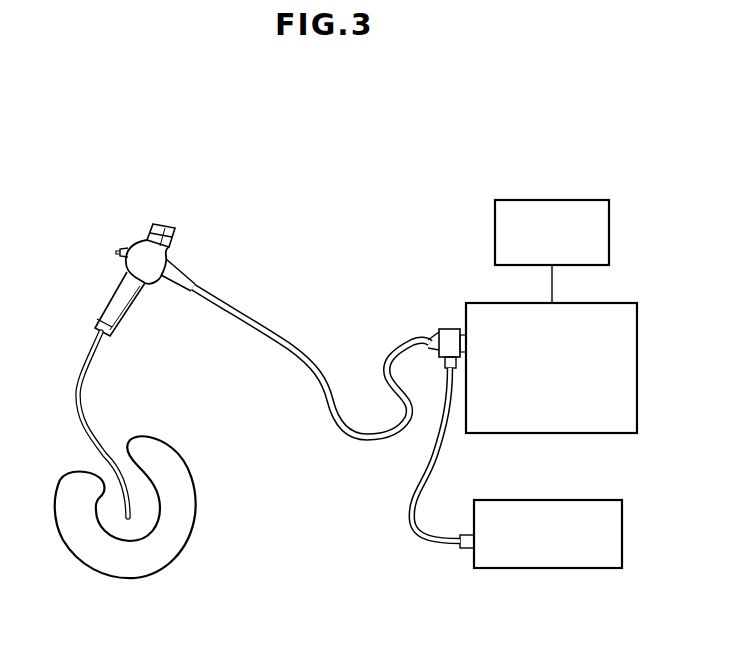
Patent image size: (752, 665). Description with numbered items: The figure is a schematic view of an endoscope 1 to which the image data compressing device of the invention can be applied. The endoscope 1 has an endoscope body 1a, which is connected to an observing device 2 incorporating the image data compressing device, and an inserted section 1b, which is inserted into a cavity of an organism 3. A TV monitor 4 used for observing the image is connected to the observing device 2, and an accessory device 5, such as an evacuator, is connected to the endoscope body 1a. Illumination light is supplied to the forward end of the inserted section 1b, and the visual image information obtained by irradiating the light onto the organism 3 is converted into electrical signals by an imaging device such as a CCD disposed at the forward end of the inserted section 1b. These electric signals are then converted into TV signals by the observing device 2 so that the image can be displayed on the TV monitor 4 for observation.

The endoscope 1 is at (177, 260).
The endoscope body 1a is at (115, 290).
The inserted section 1b is at (93, 446).
The observing device 2 is at (638, 369).
The organism 3 is at (188, 518).
The TV monitor 4 is at (554, 200).
The accessory device 5 is at (623, 532).